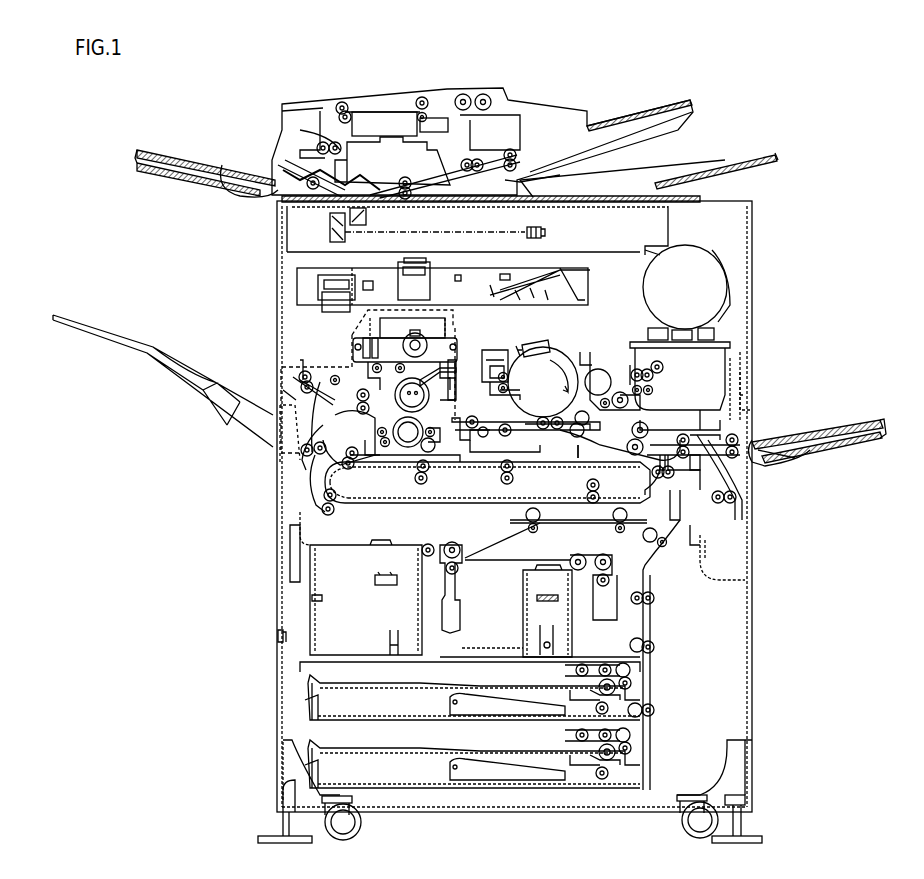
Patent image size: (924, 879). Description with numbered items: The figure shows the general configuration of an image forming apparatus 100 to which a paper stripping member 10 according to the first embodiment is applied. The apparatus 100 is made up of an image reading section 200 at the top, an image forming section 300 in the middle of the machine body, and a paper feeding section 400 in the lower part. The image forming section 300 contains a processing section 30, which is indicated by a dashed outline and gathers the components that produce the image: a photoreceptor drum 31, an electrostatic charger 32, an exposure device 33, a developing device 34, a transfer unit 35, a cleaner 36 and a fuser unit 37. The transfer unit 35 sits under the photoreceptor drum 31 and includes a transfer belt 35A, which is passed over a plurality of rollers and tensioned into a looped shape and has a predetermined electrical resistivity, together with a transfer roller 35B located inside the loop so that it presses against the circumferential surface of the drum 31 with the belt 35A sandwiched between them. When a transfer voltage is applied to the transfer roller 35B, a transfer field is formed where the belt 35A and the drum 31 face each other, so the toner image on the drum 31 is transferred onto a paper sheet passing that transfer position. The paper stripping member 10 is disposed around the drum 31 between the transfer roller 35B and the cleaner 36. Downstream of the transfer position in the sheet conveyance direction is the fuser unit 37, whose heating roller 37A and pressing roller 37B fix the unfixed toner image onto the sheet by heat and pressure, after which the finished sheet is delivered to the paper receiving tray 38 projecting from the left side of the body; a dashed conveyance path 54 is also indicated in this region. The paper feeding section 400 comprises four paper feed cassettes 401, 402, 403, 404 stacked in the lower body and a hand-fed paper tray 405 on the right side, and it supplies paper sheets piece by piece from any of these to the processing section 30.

The image forming apparatus 100 is at (763, 80).
The image reading section 200 is at (785, 189).
The image forming section 300 is at (785, 347).
The paper feeding section 400 is at (785, 664).
The paper stripping member 10 is at (490, 394).
The processing section 30 is at (340, 334).
The photoreceptor drum 31 is at (566, 350).
The electrostatic charger 32 is at (527, 343).
The exposure device 33 is at (590, 284).
The developing device 34 is at (607, 357).
The transfer unit 35 is at (527, 455).
The transfer belt 35A is at (570, 438).
The transfer roller 35B is at (500, 406).
The cleaner 36 is at (492, 358).
The fuser unit 37 is at (352, 364).
The heating roller 37A is at (311, 406).
The pressing roller 37B is at (338, 461).
The paper receiving tray 38 is at (188, 364).
The conveyance path 54 is at (280, 462).
The paper feed cassette 401 is at (325, 606).
The paper feed cassette 402 is at (600, 630).
The paper feed cassette 403 is at (305, 693).
The paper feed cassette 404 is at (305, 763).
The hand-fed paper tray 405 is at (845, 440).